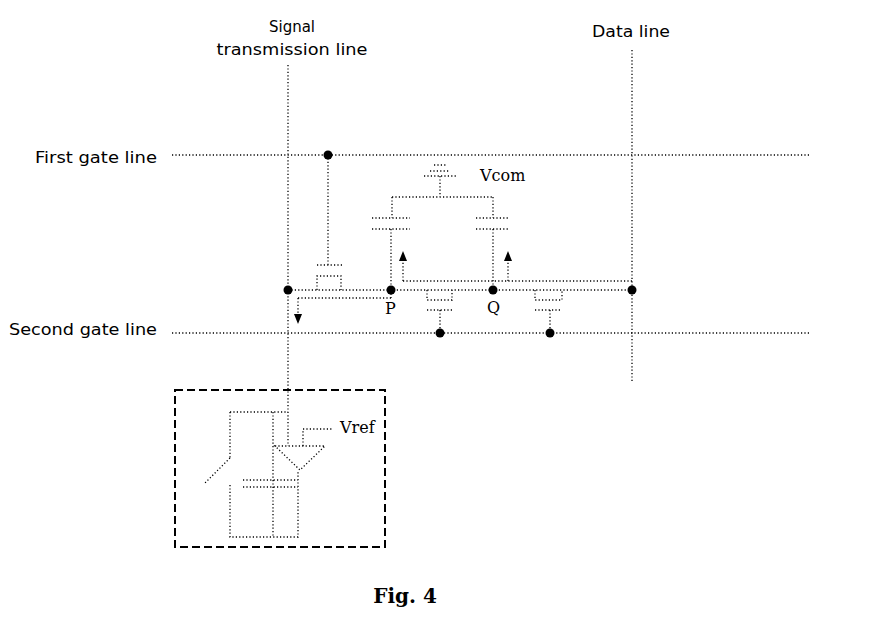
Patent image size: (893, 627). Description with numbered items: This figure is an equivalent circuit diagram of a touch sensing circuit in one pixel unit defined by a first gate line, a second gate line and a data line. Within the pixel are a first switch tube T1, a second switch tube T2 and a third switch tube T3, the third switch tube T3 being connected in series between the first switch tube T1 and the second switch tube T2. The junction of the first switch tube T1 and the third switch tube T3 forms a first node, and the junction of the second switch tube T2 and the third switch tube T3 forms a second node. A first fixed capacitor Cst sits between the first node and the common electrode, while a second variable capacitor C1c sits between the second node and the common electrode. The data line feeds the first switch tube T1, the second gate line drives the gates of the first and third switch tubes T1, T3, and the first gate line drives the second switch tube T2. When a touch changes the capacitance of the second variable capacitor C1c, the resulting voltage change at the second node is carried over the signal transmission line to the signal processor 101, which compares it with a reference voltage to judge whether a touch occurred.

The signal processor 101 is at (386, 457).
The first switch tube T1 is at (548, 297).
The second switch tube T2 is at (333, 241).
The third switch tube T3 is at (442, 297).
The second variable capacitor C1c is at (376, 243).
The first fixed capacitor Cst is at (511, 243).